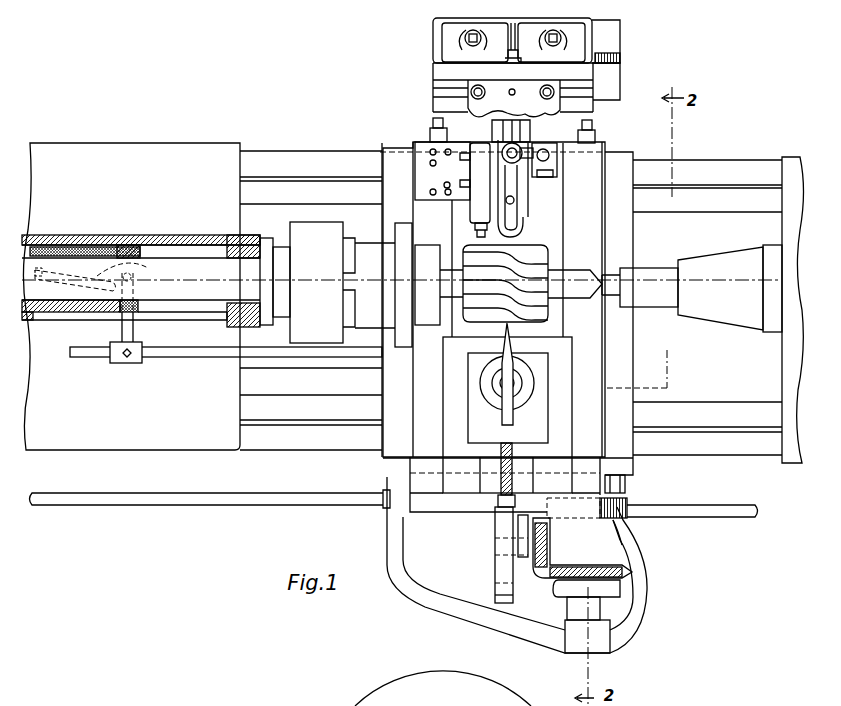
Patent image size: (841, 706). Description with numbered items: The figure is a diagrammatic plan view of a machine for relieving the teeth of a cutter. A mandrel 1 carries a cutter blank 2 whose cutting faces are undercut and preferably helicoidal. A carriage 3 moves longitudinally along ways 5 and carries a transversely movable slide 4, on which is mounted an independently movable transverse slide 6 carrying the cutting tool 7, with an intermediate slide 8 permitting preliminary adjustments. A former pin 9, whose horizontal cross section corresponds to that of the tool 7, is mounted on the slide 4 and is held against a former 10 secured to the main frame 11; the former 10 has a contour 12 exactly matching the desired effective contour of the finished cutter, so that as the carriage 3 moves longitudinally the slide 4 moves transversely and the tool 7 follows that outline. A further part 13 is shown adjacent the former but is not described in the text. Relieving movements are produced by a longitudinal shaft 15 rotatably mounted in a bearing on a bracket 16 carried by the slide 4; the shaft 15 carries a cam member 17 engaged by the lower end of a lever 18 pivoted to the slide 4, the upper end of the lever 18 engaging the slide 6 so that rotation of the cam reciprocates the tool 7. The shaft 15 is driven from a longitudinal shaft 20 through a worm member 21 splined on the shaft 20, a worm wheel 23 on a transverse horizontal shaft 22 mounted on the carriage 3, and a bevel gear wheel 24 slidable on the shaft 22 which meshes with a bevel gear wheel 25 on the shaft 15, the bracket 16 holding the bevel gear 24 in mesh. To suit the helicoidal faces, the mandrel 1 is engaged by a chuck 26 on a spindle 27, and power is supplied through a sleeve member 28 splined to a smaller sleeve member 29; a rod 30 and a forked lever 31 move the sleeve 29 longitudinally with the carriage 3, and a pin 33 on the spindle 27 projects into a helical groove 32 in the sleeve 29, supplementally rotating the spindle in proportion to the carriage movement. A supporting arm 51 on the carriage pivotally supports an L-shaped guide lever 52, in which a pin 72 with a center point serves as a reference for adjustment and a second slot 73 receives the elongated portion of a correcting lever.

The mandrel 1 is at (575, 297).
The cutter blank 2 is at (537, 250).
The carriage 3 is at (633, 250).
The transversely movable slide 4 is at (600, 362).
The ways 5 is at (740, 161).
The transverse slide 6 is at (573, 340).
The cutting tool 7 is at (513, 421).
The intermediate slide 8 is at (547, 423).
The former pin 9 is at (535, 143).
The former 10 is at (550, 82).
The main frame 11 is at (612, 40).
The contour 12 is at (435, 120).
The screw 13 is at (593, 110).
The longitudinal shaft 15 is at (500, 545).
The bracket 16 is at (542, 585).
The cam member 17 is at (495, 567).
The lever 18 is at (497, 595).
The longitudinal shaft 20 is at (178, 507).
The worm member 21 is at (623, 486).
The transverse horizontal shaft 22 is at (625, 533).
The worm wheel 23 is at (625, 502).
The bevel gear wheel 24 is at (620, 570).
The bevel gear wheel 25 is at (553, 550).
The chuck 26 is at (315, 222).
The spindle 27 is at (185, 260).
The sleeve member 28 is at (30, 235).
The sleeve member 29 is at (100, 250).
The rod 30 is at (259, 362).
The forked lever 31 is at (134, 333).
The helical groove 32 is at (148, 268).
The pin 33 is at (37, 277).
The supporting arm 51 is at (483, 140).
The L-shaped guide lever 52 is at (528, 201).
The pin 72 is at (557, 145).
The second slot 73 is at (523, 233).